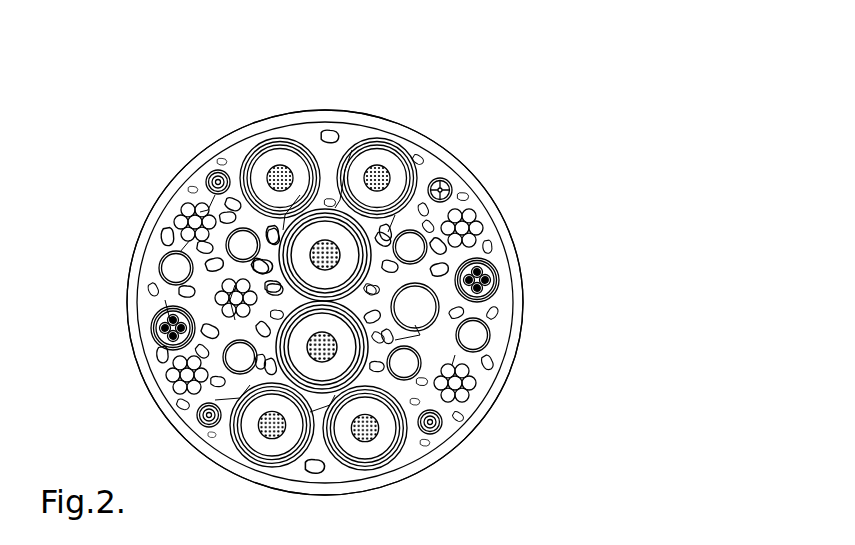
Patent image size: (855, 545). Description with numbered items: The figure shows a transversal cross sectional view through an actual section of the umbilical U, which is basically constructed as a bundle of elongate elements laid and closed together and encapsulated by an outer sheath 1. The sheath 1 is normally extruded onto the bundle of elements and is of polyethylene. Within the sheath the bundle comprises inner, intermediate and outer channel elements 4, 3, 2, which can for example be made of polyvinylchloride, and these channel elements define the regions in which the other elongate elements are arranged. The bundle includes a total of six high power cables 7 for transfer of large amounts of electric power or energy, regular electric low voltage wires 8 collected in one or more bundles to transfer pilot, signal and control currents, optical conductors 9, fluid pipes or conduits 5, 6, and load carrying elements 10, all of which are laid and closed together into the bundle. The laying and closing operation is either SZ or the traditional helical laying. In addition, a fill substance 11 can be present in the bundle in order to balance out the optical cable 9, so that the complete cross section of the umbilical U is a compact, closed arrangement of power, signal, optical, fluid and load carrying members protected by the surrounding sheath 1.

The umbilical U is at (486, 98).
The outer sheath 1 is at (144, 200).
The outer channel element 2 is at (302, 130).
The intermediate channel element 3 is at (337, 160).
The inner channel element 4 is at (343, 300).
The fluid pipe 5 is at (437, 298).
The fluid pipe 6 is at (490, 337).
The high power cable 7 is at (398, 176).
The electric low voltage wires 8 is at (492, 285).
The optical conductor 9 is at (443, 427).
The load carrying elements 10 is at (478, 222).
The fill substance 11 is at (447, 190).